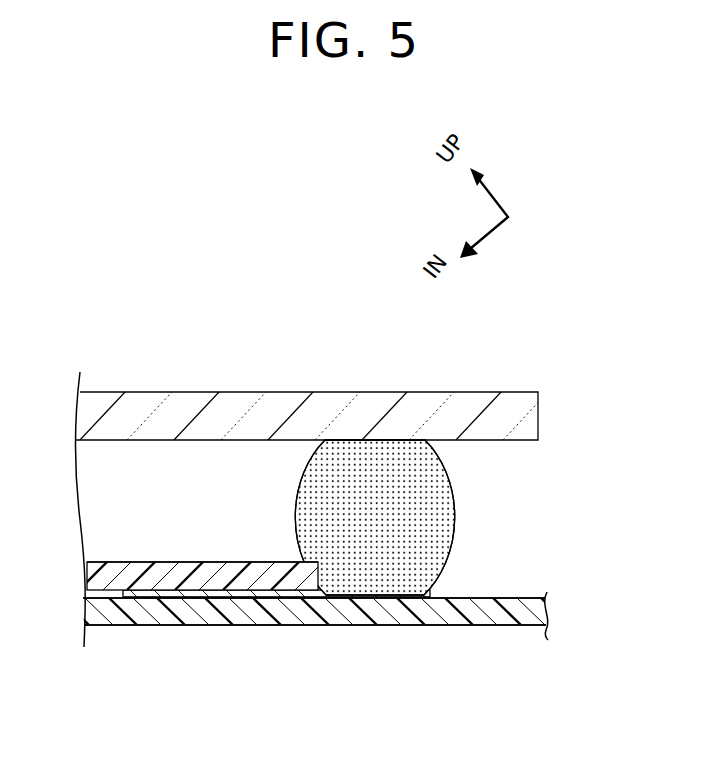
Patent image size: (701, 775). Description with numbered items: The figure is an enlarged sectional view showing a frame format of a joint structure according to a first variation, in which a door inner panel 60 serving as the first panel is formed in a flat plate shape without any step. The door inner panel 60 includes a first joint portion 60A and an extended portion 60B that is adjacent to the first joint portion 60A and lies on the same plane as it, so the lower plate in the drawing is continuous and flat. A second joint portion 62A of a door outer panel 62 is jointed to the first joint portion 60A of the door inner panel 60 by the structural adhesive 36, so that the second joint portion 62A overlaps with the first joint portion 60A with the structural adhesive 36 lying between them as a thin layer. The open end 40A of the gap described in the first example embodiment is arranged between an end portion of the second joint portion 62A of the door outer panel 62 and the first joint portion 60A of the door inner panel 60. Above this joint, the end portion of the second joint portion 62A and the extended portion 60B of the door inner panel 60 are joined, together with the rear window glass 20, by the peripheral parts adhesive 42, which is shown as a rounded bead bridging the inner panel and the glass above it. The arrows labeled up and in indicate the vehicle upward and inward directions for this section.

The rear window glass 20 is at (197, 392).
The structural adhesive 36 is at (190, 600).
The open end 40A is at (301, 593).
The peripheral parts adhesive 42 is at (430, 557).
The door inner panel 60 is at (115, 630).
The first joint portion 60A is at (237, 627).
The extended portion 60B is at (398, 605).
The door outer panel 62 is at (92, 554).
The second joint portion 62A is at (230, 561).